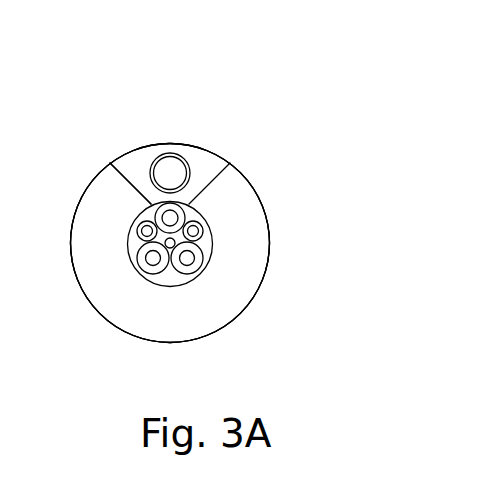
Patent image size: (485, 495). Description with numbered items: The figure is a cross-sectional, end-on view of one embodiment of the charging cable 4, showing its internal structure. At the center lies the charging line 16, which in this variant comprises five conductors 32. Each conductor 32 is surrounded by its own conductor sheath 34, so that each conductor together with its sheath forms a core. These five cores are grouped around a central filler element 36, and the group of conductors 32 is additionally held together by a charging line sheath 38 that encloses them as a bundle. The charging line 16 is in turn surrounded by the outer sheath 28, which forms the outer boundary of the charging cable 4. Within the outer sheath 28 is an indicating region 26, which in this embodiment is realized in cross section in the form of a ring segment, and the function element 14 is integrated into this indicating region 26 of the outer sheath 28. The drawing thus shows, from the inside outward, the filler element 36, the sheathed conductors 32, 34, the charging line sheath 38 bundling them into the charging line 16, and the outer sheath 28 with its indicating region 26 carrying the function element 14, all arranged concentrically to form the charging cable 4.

The charging cable 4 is at (165, 220).
The function element 14 is at (170, 145).
The charging line 16 is at (163, 243).
The indicating region 26 is at (170, 150).
The outer sheath 28 is at (170, 220).
The conductor 32 is at (170, 292).
The conductor sheath 34 is at (210, 311).
The filler element 36 is at (112, 281).
The charging line sheath 38 is at (145, 316).